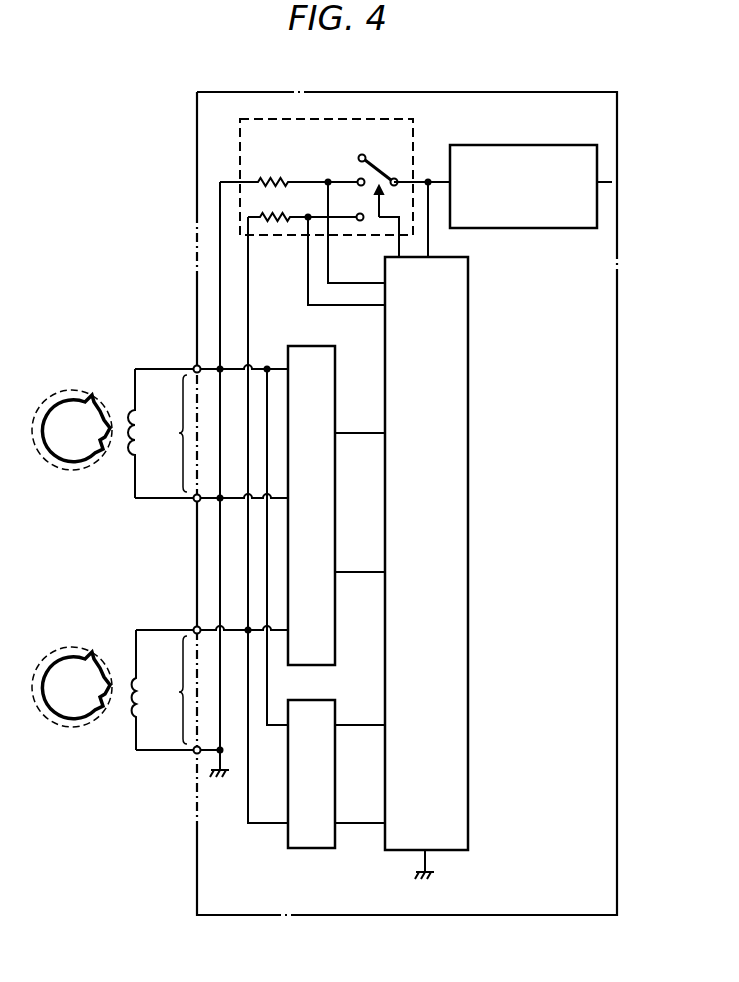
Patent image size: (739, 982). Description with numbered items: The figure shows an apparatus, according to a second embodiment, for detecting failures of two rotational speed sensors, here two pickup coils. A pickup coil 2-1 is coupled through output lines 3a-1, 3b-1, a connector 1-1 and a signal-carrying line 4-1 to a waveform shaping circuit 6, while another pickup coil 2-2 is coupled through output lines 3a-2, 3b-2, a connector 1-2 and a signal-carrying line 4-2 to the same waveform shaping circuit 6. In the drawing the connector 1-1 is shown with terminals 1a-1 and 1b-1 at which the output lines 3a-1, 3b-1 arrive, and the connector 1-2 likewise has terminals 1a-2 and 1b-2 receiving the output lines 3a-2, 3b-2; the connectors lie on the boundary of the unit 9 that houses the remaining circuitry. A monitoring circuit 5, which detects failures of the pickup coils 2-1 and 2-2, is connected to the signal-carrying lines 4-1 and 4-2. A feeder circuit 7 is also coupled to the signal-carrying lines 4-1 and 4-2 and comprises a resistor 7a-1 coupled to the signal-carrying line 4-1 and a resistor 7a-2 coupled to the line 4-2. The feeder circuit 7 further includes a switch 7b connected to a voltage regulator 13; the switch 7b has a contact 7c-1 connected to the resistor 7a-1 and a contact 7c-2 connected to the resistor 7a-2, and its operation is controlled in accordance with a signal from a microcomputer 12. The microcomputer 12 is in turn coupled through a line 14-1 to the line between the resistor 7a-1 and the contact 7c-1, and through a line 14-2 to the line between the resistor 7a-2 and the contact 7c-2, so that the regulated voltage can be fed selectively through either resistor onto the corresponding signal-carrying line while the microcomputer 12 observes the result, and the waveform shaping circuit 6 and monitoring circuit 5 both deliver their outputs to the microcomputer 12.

The connector 1-1 is at (157, 433).
The connector 1-2 is at (159, 690).
The pickup terminal 1a-1 is at (194, 366).
The pickup terminal 1b-1 is at (194, 501).
The pickup terminal 1a-2 is at (194, 627).
The pickup terminal 1b-2 is at (194, 753).
The pickup coil 2-1 is at (130, 412).
The pickup coil 2-2 is at (132, 718).
The output line 3a-1 is at (135, 368).
The output line 3b-1 is at (135, 500).
The output line 3a-2 is at (136, 629).
The output line 3b-2 is at (140, 752).
The signal-carrying line 4-1 is at (267, 366).
The signal-carrying line 4-2 is at (232, 632).
The monitoring circuit 5 is at (335, 708).
The waveform shaping circuit 6 is at (335, 352).
The feeder circuit 7 is at (414, 134).
The resistor 7a-1 is at (268, 178).
The resistor 7a-2 is at (265, 213).
The switch 7b is at (378, 170).
The contact 7c-1 is at (358, 178).
The contact 7c-2 is at (360, 213).
The control unit 9 is at (617, 132).
The microcomputer 12 is at (468, 296).
The voltage regulator 13 is at (584, 145).
The line 14-1 is at (328, 253).
The line 14-2 is at (308, 266).